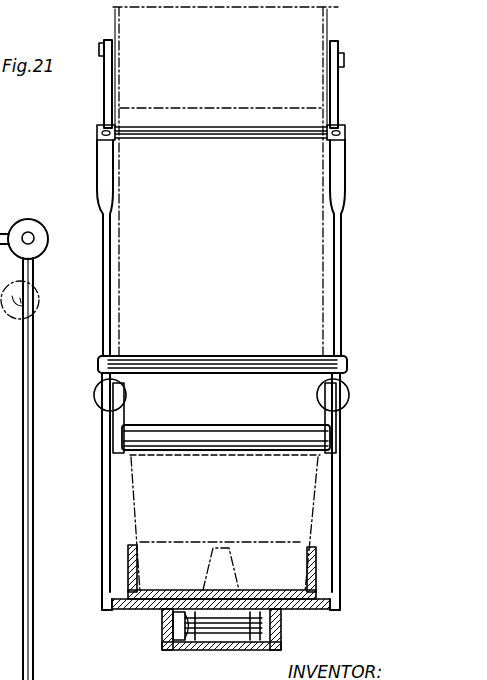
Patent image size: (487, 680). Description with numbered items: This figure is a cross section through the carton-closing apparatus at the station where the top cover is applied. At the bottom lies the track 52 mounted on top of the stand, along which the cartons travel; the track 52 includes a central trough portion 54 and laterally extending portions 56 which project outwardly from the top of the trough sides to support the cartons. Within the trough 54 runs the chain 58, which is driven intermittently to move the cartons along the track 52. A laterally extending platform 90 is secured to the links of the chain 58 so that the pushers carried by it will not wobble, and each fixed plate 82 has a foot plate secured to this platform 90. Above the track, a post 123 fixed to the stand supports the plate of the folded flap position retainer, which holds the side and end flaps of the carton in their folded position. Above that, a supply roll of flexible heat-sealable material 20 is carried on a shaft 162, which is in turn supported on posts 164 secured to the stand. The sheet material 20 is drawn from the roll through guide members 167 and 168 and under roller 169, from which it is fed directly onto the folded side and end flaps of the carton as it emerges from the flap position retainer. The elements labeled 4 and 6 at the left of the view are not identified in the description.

The supply roll of flexible heat-sealable material 20 is at (314, 272).
The shaft 162 is at (344, 60).
The posts 164 is at (103, 106).
The guide member 167 is at (262, 134).
The guide member 168 is at (216, 357).
The roller 169 is at (225, 432).
The post 123 is at (338, 547).
The track 52 is at (316, 578).
The laterally extending portions 56 is at (136, 610).
The trough portion 54 is at (283, 636).
The platform 90 is at (166, 612).
The chain 58 is at (256, 644).
The support post 4 is at (24, 309).
The pivot 6 is at (23, 452).
The fixed plate 82 is at (16, 469).